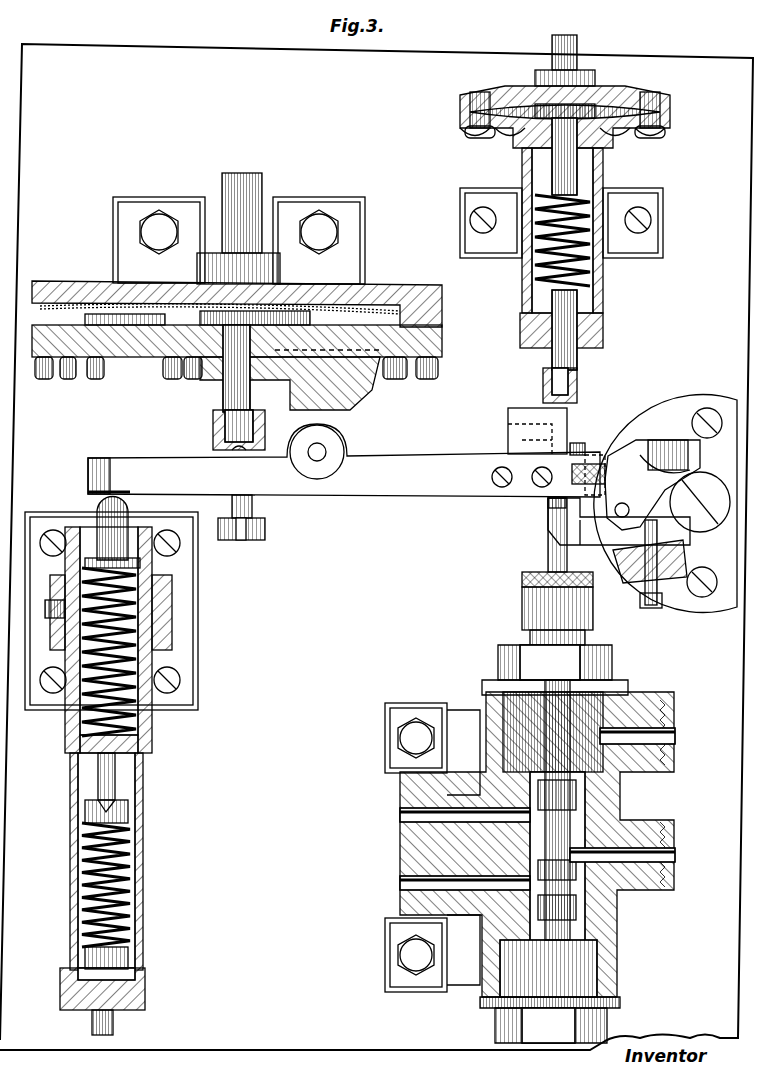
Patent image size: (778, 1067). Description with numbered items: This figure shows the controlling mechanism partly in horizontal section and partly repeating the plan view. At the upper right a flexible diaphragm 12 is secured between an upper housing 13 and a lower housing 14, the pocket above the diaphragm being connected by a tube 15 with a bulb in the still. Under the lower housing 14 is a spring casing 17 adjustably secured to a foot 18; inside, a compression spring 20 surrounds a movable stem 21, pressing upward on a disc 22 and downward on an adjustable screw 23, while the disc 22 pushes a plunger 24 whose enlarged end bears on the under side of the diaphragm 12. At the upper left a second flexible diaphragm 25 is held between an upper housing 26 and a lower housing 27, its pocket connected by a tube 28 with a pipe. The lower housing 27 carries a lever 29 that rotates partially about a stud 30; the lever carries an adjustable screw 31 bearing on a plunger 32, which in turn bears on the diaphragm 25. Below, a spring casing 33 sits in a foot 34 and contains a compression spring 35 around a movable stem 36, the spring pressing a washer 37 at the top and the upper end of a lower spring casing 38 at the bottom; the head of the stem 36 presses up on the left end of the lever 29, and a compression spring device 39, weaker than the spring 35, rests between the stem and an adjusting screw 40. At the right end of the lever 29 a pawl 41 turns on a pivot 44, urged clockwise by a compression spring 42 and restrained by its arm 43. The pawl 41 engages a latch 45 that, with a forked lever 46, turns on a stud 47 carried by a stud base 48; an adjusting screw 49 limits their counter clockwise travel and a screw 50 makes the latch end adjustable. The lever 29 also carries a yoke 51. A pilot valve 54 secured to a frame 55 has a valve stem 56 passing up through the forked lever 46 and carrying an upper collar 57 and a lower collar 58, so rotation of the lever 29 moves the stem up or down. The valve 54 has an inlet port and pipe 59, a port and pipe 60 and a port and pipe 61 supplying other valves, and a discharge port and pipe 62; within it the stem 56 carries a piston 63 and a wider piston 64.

The flexible diaphragm 12 is at (465, 105).
The upper housing 13 is at (665, 105).
The lower housing 14 is at (665, 125).
The tube 15 is at (577, 48).
The spring casing 17 is at (603, 178).
The foot 18 is at (472, 202).
The compression spring 20 is at (524, 268).
The movable stem 21 is at (552, 352).
The disc 22 is at (540, 195).
The adjustable screw 23 is at (520, 333).
The plunger 24 is at (610, 95).
The flexible diaphragm 25 is at (350, 310).
The upper housing 26 is at (52, 295).
The lower housing 27 is at (140, 335).
The tube 28 is at (262, 190).
The lever 29 is at (425, 496).
The stud 30 is at (325, 447).
The adjustable screw 31 is at (265, 530).
The plunger 32 is at (226, 390).
The spring casing 33 is at (70, 735).
The foot 34 is at (198, 615).
The compression spring 35 is at (160, 572).
The movable stem 36 is at (108, 520).
The washer 37 is at (140, 563).
The spring casing 38 is at (72, 835).
The compression spring device 39 is at (130, 840).
The adjusting screw 40 is at (113, 1025).
The pawl 41 is at (625, 450).
The compression spring 42 is at (598, 460).
The arm 43 is at (600, 500).
The pivot 44 is at (622, 517).
The latch 45 is at (662, 440).
The forked lever 46 is at (550, 510).
The stud 47 is at (700, 498).
The stud base 48 is at (690, 405).
The adjusting screw 49 is at (650, 605).
The screw 50 is at (695, 445).
The yoke 51 is at (508, 435).
The pilot valve 54 is at (617, 955).
The frame 55 is at (462, 720).
The valve stem 56 is at (548, 550).
The upper collar 57 is at (580, 443).
The lower collar 58 is at (548, 503).
The inlet port and pipe 59 is at (675, 855).
The port and pipe 60 is at (400, 815).
The port and pipe 61 is at (400, 883).
The discharge port and pipe 62 is at (675, 735).
The piston 63 is at (580, 840).
The piston 64 is at (576, 905).